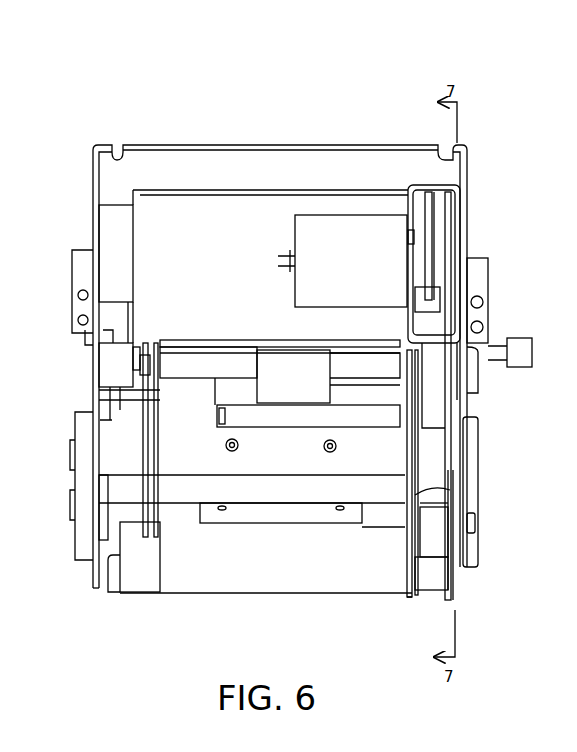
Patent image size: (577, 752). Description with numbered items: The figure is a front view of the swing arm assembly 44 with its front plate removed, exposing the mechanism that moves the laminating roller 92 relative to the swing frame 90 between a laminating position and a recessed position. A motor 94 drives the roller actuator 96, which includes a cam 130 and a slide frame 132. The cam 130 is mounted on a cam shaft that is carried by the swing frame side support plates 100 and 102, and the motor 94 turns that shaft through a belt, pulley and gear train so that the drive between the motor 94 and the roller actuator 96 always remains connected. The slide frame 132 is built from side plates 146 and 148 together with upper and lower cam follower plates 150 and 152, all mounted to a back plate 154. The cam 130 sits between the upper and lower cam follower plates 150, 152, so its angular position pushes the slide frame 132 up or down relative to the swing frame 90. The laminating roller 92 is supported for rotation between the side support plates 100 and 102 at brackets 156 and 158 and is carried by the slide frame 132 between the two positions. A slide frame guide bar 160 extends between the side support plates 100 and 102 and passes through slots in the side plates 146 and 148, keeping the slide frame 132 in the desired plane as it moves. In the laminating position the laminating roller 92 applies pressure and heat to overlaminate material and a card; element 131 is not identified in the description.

The swing arm assembly 44 is at (433, 77).
The swing frame 90 is at (467, 172).
The laminating roller 92 is at (358, 588).
The motor 94 is at (323, 225).
The roller actuator 96 is at (395, 457).
The side support plate 100 is at (467, 243).
The side support plate 102 is at (97, 220).
The cam 130 is at (267, 358).
The roller 131 is at (190, 357).
The slide frame 132 is at (432, 466).
The side plate 146 is at (478, 500).
The side plate 148 is at (157, 443).
The upper cam follower plate 150 is at (365, 343).
The lower cam follower plate 152 is at (280, 417).
The back plate 154 is at (393, 425).
The bracket 156 is at (130, 585).
The bracket 158 is at (423, 593).
The slide frame guide bar 160 is at (285, 495).